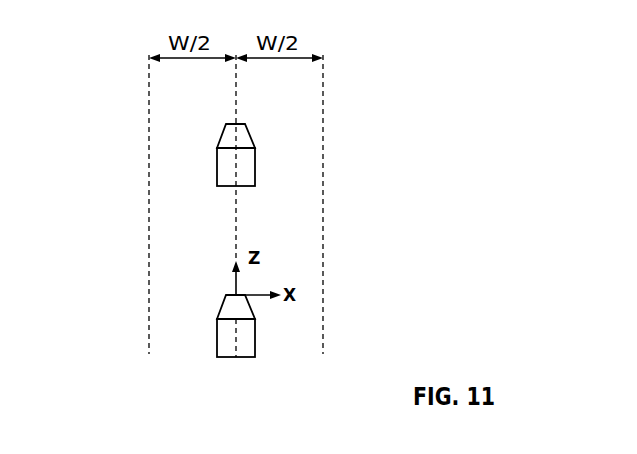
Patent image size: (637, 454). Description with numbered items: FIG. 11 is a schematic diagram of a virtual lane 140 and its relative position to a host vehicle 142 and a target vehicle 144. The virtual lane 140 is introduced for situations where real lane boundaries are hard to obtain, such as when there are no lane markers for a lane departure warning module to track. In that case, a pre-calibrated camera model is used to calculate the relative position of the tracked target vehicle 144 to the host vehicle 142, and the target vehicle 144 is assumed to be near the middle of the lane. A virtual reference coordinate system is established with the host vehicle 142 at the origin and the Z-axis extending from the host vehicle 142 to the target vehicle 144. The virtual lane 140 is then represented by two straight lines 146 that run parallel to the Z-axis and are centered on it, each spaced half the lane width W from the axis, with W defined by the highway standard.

The virtual lane 140 is at (170, 343).
The host vehicle 142 is at (256, 352).
The target vehicle 144 is at (250, 135).
The straight lines 146 is at (148, 201).